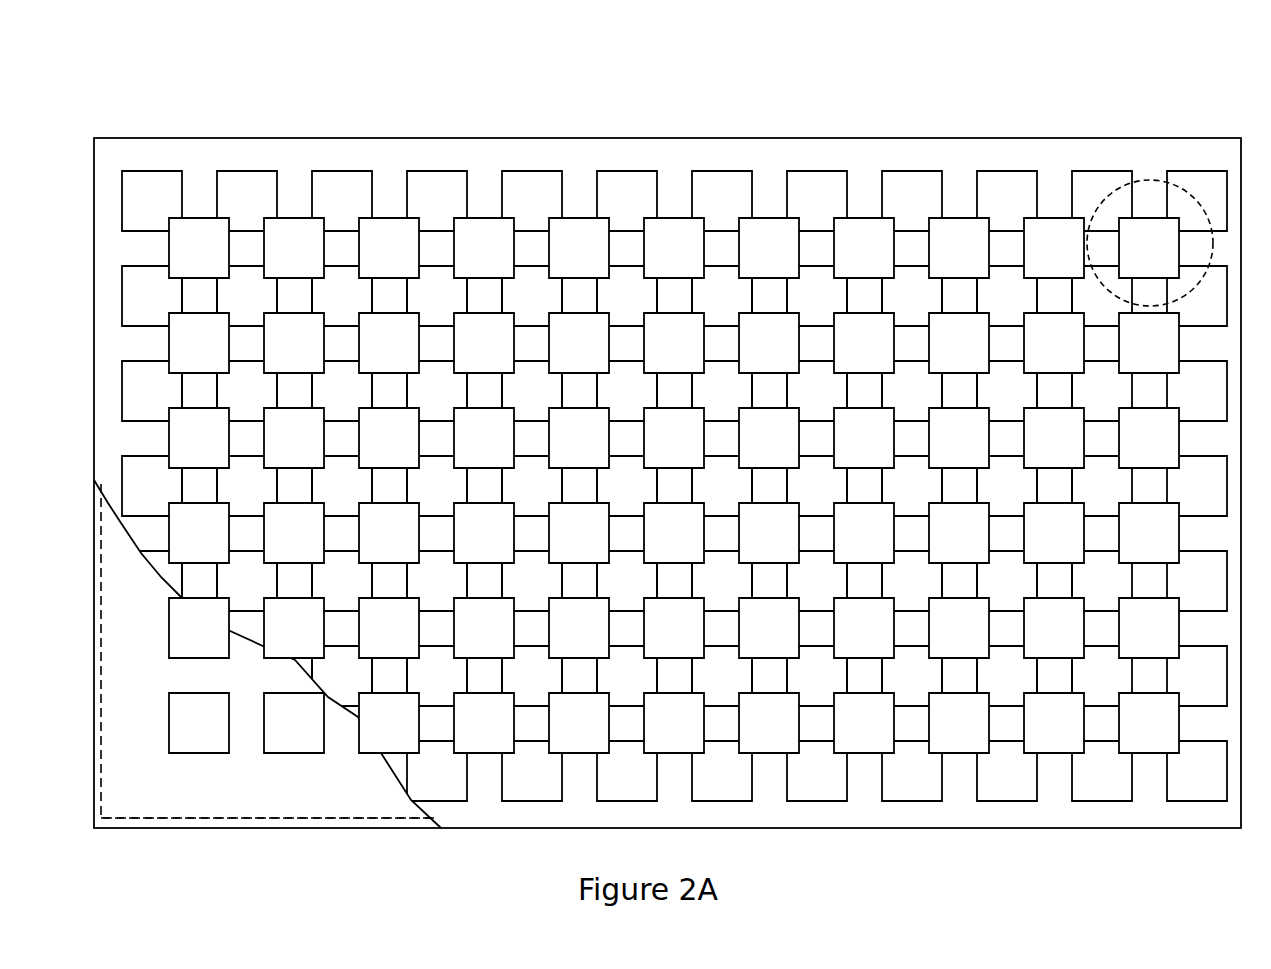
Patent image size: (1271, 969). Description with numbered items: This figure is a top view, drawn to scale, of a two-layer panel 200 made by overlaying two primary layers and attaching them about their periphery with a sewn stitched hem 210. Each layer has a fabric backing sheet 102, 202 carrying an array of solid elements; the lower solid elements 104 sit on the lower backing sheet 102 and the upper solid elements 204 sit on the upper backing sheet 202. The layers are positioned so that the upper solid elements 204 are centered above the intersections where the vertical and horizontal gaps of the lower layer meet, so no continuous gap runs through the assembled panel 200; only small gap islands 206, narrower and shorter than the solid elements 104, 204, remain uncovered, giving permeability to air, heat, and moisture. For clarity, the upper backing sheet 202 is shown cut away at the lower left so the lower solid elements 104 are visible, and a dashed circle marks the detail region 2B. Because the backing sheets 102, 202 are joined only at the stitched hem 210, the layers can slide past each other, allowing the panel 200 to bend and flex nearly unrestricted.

The panel 200 is at (667, 421).
The backing sheet 102 is at (780, 138).
The lower solid elements 104 is at (542, 188).
The upper solid elements 204 is at (680, 242).
The gap islands 206 is at (1008, 250).
The backing sheet 202 is at (161, 795).
The stitched hem 210 is at (365, 818).
The detail view region of FIG. 2B is at (1151, 177).